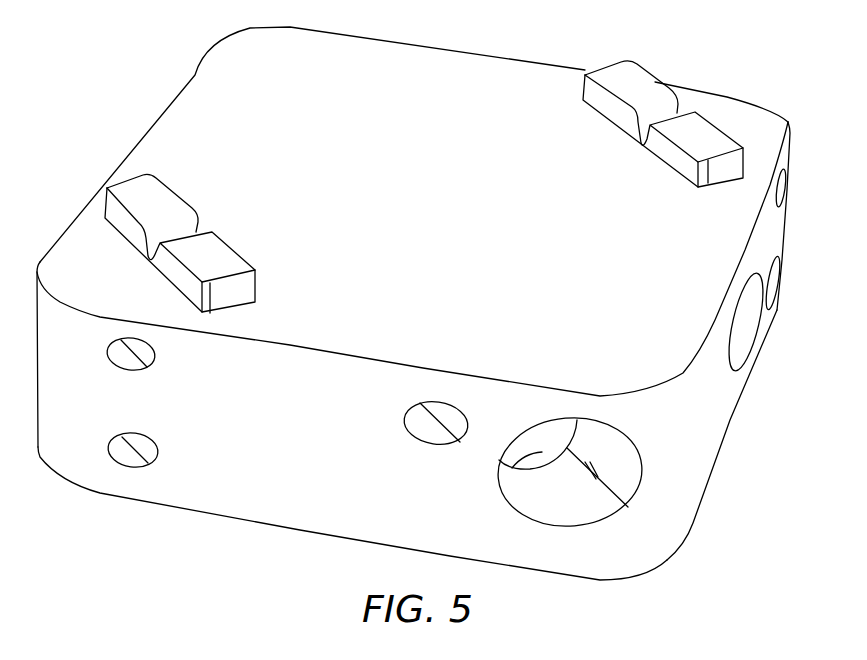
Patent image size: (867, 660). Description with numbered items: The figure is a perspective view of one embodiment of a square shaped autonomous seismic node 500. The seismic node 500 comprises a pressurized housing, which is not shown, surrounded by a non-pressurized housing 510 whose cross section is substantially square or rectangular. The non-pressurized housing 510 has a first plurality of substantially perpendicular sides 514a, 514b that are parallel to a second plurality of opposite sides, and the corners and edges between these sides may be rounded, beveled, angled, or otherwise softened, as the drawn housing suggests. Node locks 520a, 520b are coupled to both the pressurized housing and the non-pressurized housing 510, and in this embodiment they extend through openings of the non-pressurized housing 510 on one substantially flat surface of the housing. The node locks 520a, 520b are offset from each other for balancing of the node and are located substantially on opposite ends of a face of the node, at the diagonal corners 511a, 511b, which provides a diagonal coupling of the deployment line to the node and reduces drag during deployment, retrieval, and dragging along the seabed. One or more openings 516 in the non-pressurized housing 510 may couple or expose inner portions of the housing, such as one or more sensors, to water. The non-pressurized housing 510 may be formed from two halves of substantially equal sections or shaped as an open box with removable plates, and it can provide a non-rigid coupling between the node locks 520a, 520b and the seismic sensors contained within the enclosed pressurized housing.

The autonomous seismic node 500 is at (82, 96).
The non-pressurized housing 510 is at (167, 117).
The diagonal corner 511a is at (33, 268).
The diagonal corner 511b is at (785, 118).
The side 514a is at (217, 483).
The side 514b is at (710, 413).
The opening 516 is at (500, 465).
The node lock 520a is at (121, 216).
The node lock 520b is at (642, 84).